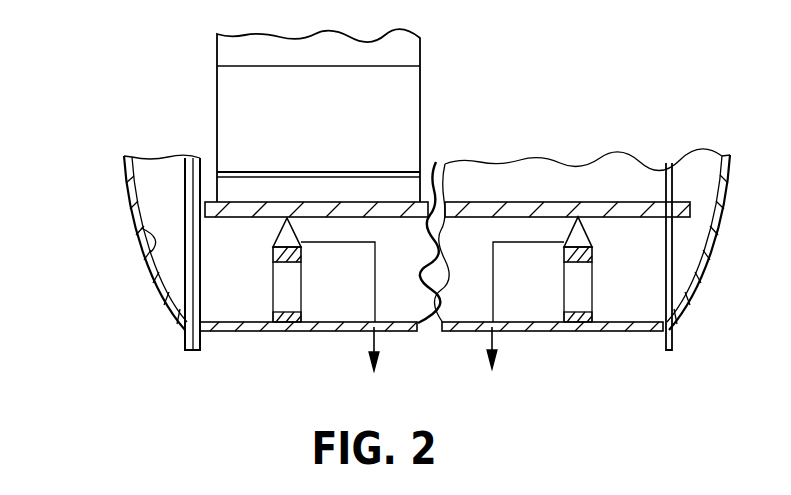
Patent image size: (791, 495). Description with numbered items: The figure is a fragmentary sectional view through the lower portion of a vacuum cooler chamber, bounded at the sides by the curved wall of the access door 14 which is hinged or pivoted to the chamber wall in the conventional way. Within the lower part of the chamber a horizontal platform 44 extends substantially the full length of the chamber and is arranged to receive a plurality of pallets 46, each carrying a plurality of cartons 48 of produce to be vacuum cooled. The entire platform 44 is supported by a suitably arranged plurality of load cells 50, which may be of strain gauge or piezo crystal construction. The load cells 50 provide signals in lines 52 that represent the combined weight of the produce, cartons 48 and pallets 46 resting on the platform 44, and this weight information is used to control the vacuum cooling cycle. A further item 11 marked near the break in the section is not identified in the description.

The break line / cavity region 11 is at (448, 313).
The door 14 is at (147, 263).
The horizontal platform 44 is at (547, 205).
The pallets 46 is at (385, 182).
The cartons 48 is at (237, 78).
The load cells 50 is at (287, 236).
The lines 52 is at (372, 329).